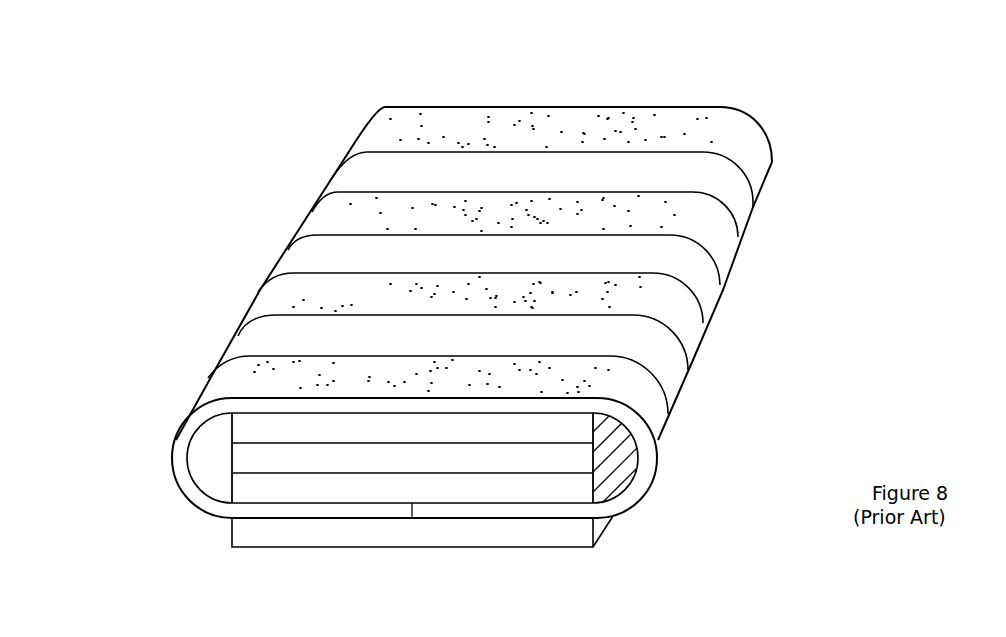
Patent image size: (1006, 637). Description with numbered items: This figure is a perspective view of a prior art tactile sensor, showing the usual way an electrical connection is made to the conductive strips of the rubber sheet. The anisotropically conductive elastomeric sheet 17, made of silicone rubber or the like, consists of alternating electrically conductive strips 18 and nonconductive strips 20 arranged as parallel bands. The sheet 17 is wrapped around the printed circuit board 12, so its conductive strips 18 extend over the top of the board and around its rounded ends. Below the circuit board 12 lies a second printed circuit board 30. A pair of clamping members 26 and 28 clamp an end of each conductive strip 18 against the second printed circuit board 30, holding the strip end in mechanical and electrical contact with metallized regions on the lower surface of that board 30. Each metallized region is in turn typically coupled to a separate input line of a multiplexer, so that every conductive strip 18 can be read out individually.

The anisotropically conductive elastomeric sheet 17 is at (723, 105).
The electrically conductive strips 18 is at (647, 408).
The nonconductive strips 20 is at (253, 342).
The printed circuit board 12 is at (253, 426).
The clamping member 26 is at (253, 454).
The second printed circuit board 30 is at (253, 487).
The clamping member 28 is at (565, 533).